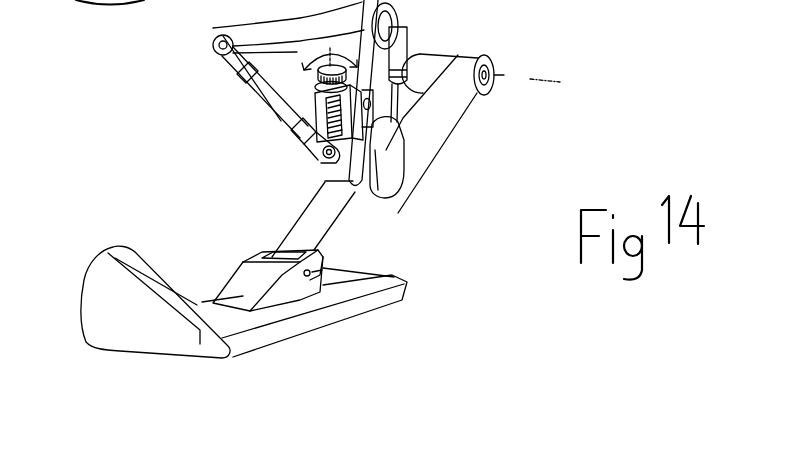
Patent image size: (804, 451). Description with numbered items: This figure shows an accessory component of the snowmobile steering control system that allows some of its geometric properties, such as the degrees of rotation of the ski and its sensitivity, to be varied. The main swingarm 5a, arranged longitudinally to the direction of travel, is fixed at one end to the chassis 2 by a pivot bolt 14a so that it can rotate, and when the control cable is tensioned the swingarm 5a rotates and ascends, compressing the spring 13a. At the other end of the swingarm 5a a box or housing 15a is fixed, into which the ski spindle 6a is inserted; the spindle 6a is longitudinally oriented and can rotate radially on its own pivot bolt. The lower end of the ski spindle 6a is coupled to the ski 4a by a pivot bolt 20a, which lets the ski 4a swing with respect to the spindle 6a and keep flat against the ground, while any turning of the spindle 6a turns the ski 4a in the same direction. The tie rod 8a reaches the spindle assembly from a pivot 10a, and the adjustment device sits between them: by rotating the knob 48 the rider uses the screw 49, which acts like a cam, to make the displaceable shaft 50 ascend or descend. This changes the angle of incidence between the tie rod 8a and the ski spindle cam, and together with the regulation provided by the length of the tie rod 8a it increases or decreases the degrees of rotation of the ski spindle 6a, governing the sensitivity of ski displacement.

The chassis 2 is at (217, 33).
The pivot joint 10a is at (215, 53).
The tie rod 8a is at (297, 124).
The displaceable shaft 50 is at (323, 157).
The knob 48 is at (315, 78).
The screw 49 is at (324, 99).
The spring 13a is at (400, 50).
The main swingarm 5a is at (423, 138).
The pivot bolt 14a is at (530, 95).
The box or housing 15a is at (380, 155).
The ski spindle 6a is at (298, 222).
The pivot bolt 20a is at (243, 264).
The ski 4a is at (107, 270).